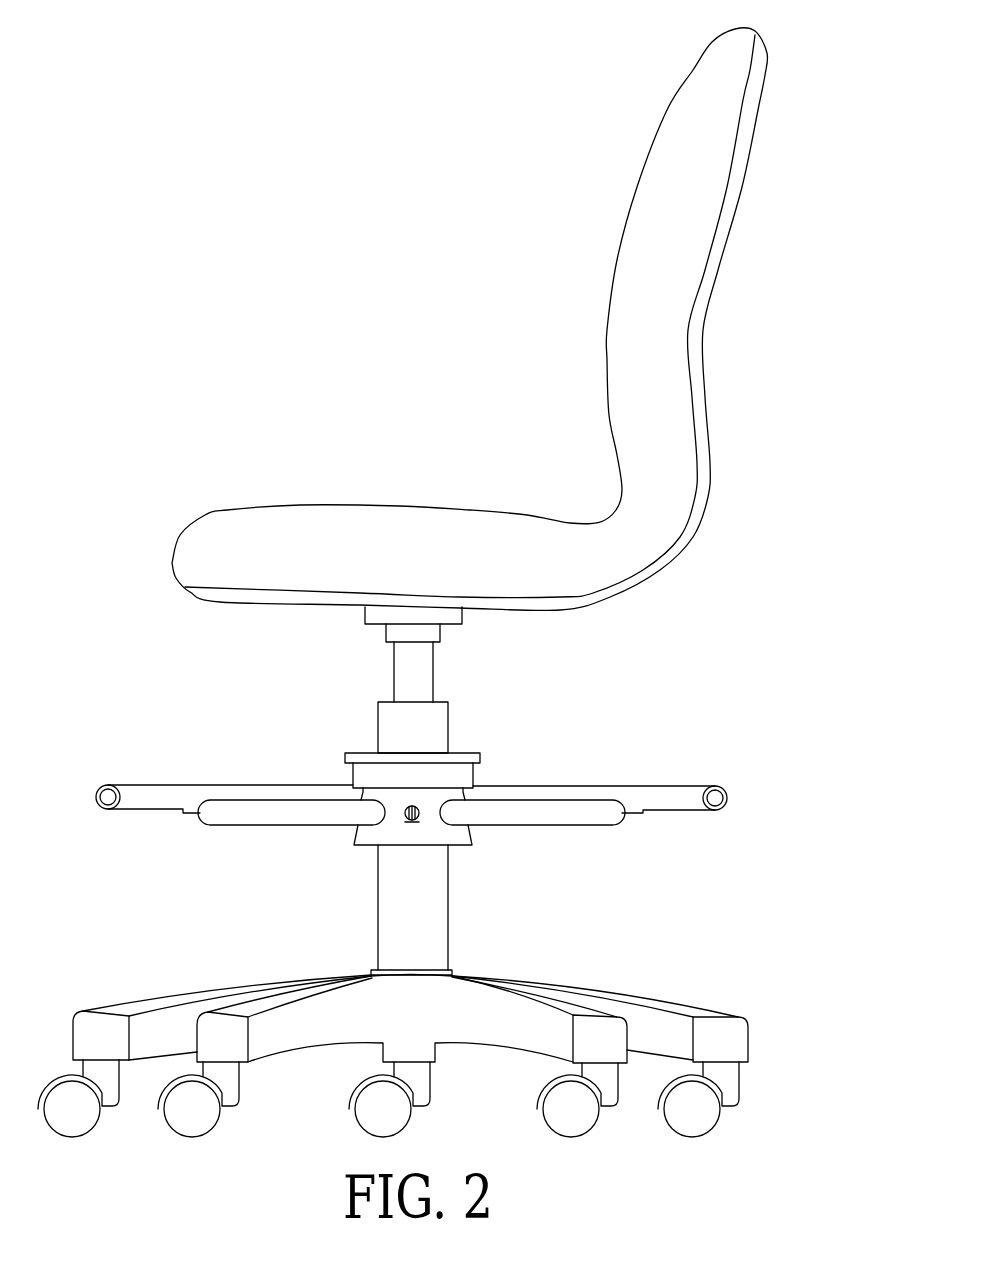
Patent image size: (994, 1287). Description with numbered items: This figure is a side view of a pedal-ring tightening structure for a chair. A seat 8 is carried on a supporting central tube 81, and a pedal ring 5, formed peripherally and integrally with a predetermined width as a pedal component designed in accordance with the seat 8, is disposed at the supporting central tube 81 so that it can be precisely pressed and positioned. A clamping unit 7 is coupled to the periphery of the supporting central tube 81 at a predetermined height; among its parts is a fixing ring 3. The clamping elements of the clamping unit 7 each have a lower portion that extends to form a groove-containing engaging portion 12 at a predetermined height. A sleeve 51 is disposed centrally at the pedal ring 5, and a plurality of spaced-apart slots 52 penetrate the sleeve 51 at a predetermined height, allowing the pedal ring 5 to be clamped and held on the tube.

The seat 8 is at (376, 535).
The supporting central tube 81 is at (433, 722).
The fixing ring 3 is at (462, 775).
The spaced-apart slots 52 is at (409, 807).
The groove-containing engaging portion 12 is at (415, 822).
The sleeve 51 is at (372, 832).
The clamping unit 7 is at (293, 740).
The pedal ring 5 is at (672, 798).